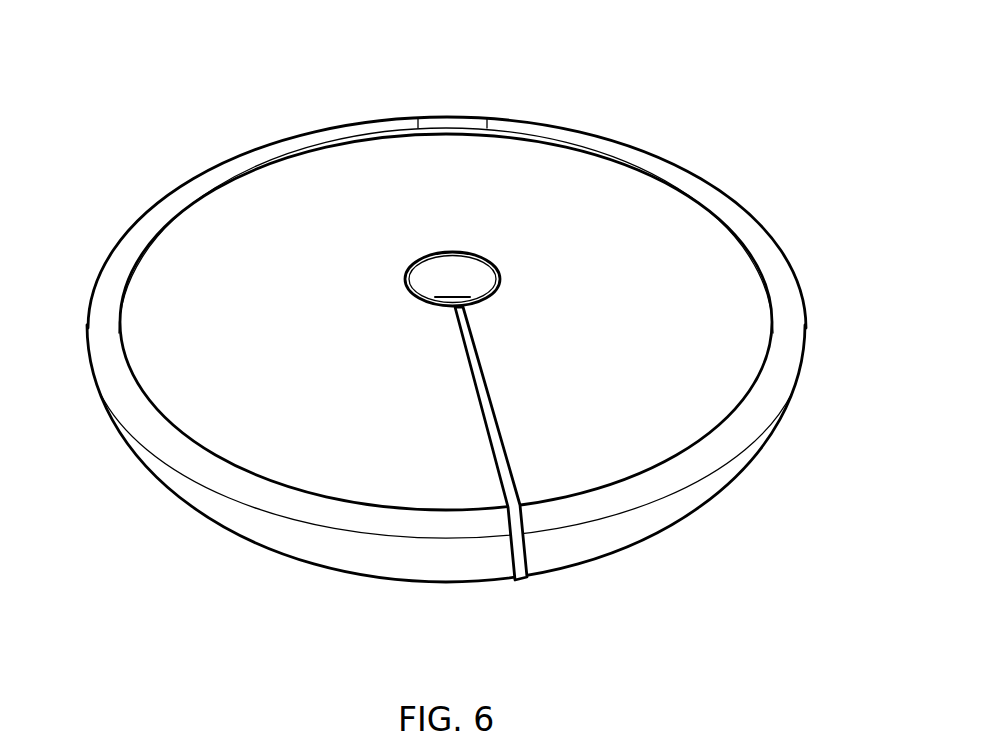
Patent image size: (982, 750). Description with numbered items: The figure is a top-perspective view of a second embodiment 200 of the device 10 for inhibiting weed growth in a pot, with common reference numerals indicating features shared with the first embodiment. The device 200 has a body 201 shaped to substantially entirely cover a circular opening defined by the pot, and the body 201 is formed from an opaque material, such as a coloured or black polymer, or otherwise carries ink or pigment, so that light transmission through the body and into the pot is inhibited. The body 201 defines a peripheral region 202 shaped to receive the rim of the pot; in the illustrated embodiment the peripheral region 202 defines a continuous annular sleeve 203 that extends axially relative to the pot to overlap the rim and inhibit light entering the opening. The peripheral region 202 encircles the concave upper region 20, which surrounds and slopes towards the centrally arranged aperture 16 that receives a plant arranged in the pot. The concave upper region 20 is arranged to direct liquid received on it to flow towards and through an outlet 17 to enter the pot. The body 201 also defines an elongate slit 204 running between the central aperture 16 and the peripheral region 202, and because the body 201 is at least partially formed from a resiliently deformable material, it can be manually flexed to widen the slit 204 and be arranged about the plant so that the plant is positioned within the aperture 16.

The device for inhibiting weed growth 10 is at (190, 91).
The second embodiment 200 is at (707, 103).
The peripheral region 202 is at (156, 206).
The body 201 is at (356, 168).
The concave upper region 20 is at (576, 190).
The continuous annular sleeve 203 is at (210, 513).
The outlet 17 is at (437, 248).
The central aperture 16 is at (452, 282).
The elongate slit 204 is at (506, 458).